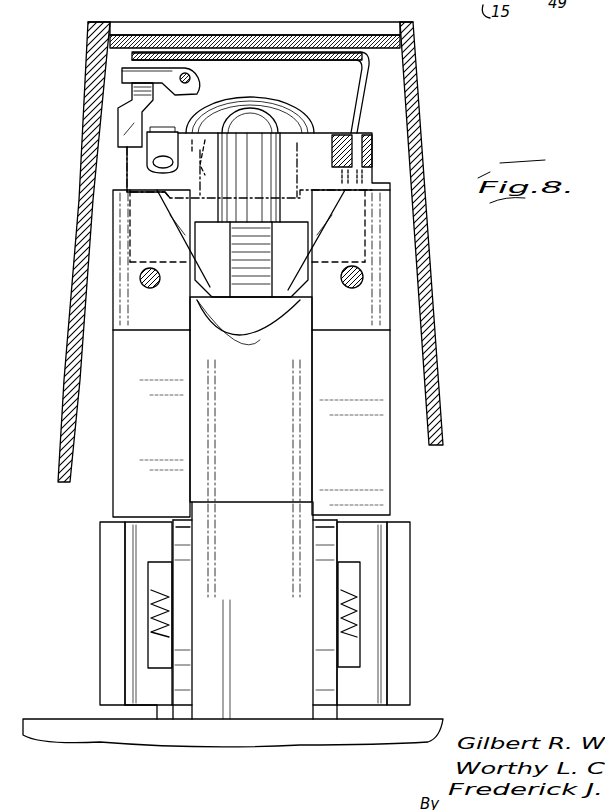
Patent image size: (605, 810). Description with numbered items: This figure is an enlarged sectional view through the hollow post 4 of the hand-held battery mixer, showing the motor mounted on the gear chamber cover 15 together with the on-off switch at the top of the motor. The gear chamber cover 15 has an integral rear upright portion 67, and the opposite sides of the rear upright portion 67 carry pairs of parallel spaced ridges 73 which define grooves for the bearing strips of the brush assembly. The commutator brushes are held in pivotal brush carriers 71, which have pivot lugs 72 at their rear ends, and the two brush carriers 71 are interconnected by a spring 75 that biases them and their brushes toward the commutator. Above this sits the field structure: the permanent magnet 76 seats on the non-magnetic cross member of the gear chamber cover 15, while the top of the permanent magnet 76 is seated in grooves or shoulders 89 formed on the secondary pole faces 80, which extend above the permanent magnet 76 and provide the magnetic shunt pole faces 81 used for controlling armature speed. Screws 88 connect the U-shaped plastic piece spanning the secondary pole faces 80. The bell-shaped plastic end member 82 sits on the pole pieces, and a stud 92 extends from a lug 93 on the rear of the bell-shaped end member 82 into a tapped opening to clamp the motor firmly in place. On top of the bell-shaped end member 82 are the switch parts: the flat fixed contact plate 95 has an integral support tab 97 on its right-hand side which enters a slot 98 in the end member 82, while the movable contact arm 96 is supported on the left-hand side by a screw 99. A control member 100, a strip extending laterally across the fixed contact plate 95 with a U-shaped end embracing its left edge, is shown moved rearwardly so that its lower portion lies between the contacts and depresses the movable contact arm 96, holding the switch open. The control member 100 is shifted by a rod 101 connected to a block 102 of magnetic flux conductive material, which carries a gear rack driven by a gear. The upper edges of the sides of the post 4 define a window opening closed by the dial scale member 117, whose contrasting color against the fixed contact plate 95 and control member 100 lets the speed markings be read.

The hollow post 4 is at (56, 277).
The gear chamber cover 15 is at (213, 746).
The rear upright portion 67 is at (255, 610).
The pivotal brush carriers 71 is at (108, 565).
The pivot lugs 72 is at (343, 545).
The parallel spaced ridges 73 is at (184, 524).
The spring 75 is at (340, 620).
The permanent magnet 76 is at (280, 424).
The secondary pole faces 80 is at (378, 244).
The magnetic shunt pole faces 81 is at (172, 212).
The bell-shaped plastic end member 82 is at (313, 150).
The screws 88 is at (146, 288).
The grooves or shoulders 89 is at (258, 336).
The stud 92 is at (262, 285).
The lug 93 is at (262, 150).
The fixed contact plate 95 is at (280, 62).
The movable contact arm 96 is at (134, 117).
The integral support tab 97 is at (367, 92).
The slot 98 is at (355, 134).
The screw 99 is at (160, 130).
The switch control member 100 is at (140, 75).
The rod 101 is at (192, 79).
The block of magnetic flux conductive material 102 is at (222, 112).
The dial scale member 117 is at (175, 37).